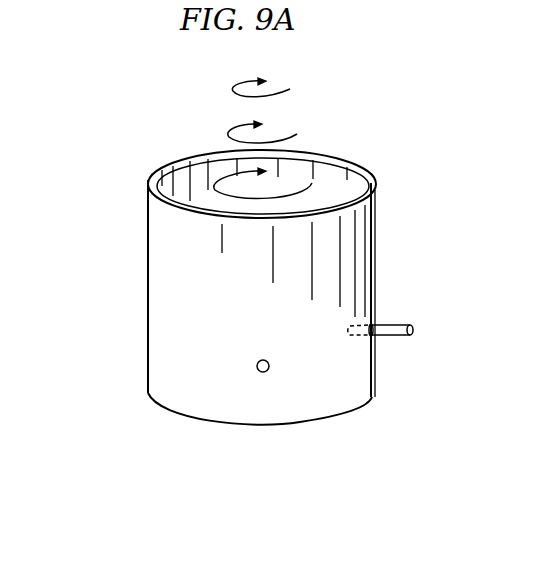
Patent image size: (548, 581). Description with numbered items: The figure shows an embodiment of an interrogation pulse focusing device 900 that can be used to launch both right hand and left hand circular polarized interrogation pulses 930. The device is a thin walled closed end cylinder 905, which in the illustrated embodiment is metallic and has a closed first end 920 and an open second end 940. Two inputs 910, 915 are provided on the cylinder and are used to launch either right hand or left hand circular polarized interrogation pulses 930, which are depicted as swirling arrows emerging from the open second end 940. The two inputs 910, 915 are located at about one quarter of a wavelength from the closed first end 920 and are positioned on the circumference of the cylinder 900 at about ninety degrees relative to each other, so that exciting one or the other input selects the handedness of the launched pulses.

The interrogation pulse focusing device 900 is at (118, 313).
The thin walled closed end cylinder 905 is at (385, 325).
The input 910 is at (378, 331).
The input 915 is at (260, 359).
The closed first end 920 is at (195, 416).
The circular polarized interrogation pulses 930 is at (208, 127).
The open second end 940 is at (343, 178).